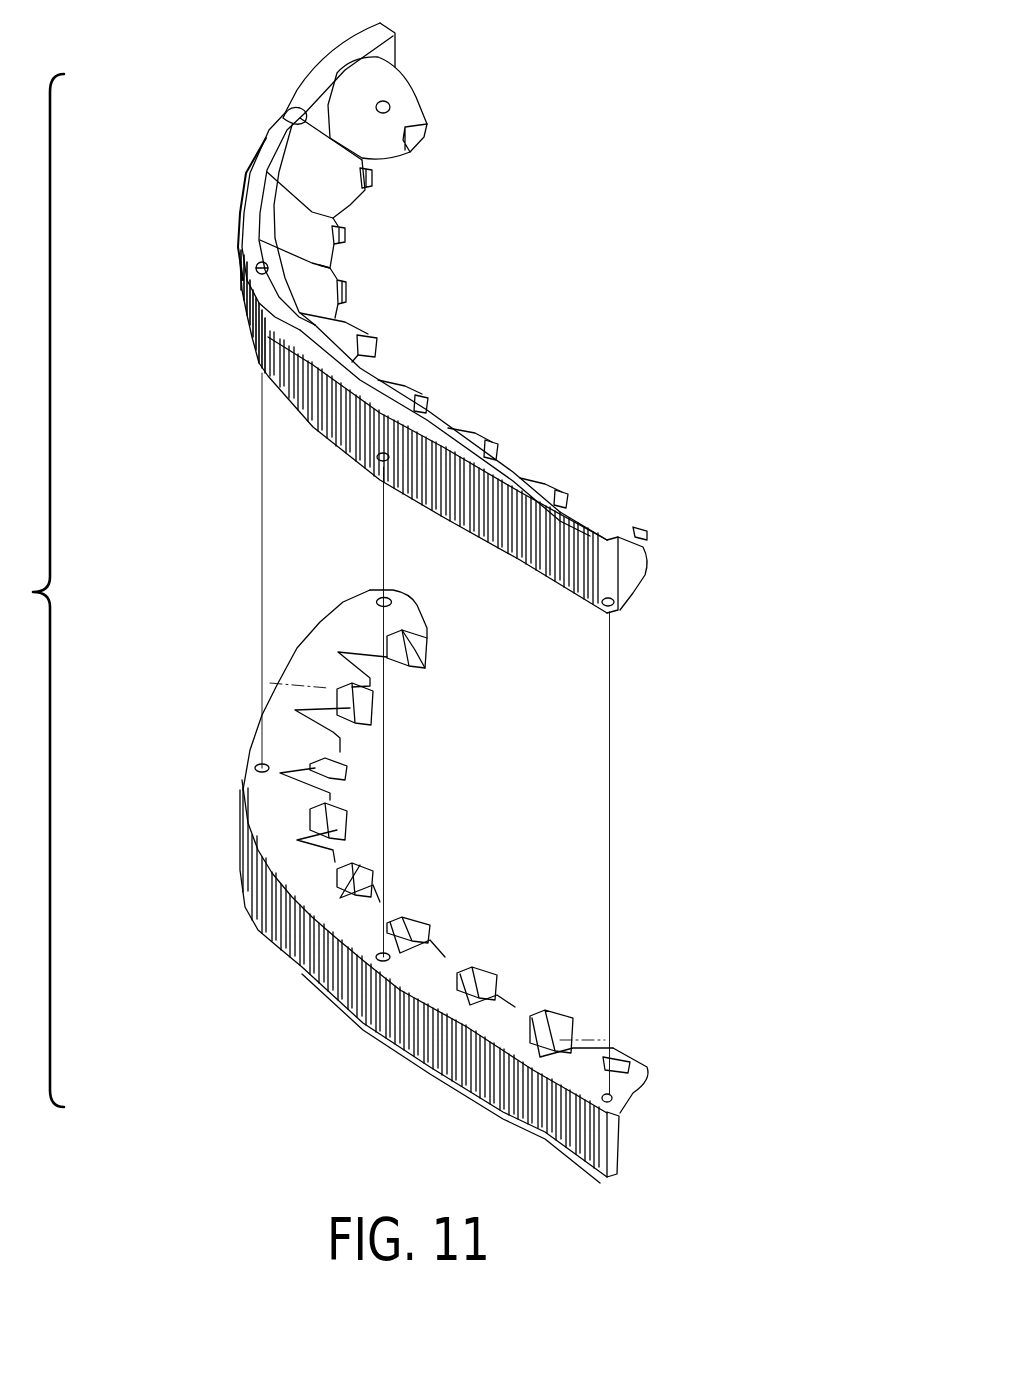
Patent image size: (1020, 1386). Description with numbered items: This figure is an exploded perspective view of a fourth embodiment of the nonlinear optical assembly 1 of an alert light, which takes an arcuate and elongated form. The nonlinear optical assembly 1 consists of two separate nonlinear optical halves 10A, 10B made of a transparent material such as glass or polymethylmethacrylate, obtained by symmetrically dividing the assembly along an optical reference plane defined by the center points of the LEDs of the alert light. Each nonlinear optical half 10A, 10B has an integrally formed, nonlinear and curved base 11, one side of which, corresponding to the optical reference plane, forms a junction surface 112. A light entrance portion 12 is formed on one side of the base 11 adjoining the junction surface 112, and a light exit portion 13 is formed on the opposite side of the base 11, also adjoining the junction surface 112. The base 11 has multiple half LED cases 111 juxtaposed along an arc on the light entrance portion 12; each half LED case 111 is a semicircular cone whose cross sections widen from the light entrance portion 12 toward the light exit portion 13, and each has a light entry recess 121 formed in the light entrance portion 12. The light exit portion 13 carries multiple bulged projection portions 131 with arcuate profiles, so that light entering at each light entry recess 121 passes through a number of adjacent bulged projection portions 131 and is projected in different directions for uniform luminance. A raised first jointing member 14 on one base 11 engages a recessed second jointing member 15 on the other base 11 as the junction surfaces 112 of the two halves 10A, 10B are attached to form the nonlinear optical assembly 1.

The nonlinear optical assembly 1 is at (189, 532).
The nonlinear optical half 10A is at (404, 48).
The nonlinear optical half 10B is at (619, 1179).
The base 11 is at (430, 108).
The half LED case 111 is at (402, 92).
The junction surface 112 is at (312, 672).
The light entrance portion 12 is at (402, 143).
The light entry recess 121 is at (422, 641).
The light exit portion 13 is at (307, 67).
The bulged projection portion 131 is at (337, 425).
The first jointing member 14 is at (612, 607).
The second jointing member 15 is at (613, 1095).